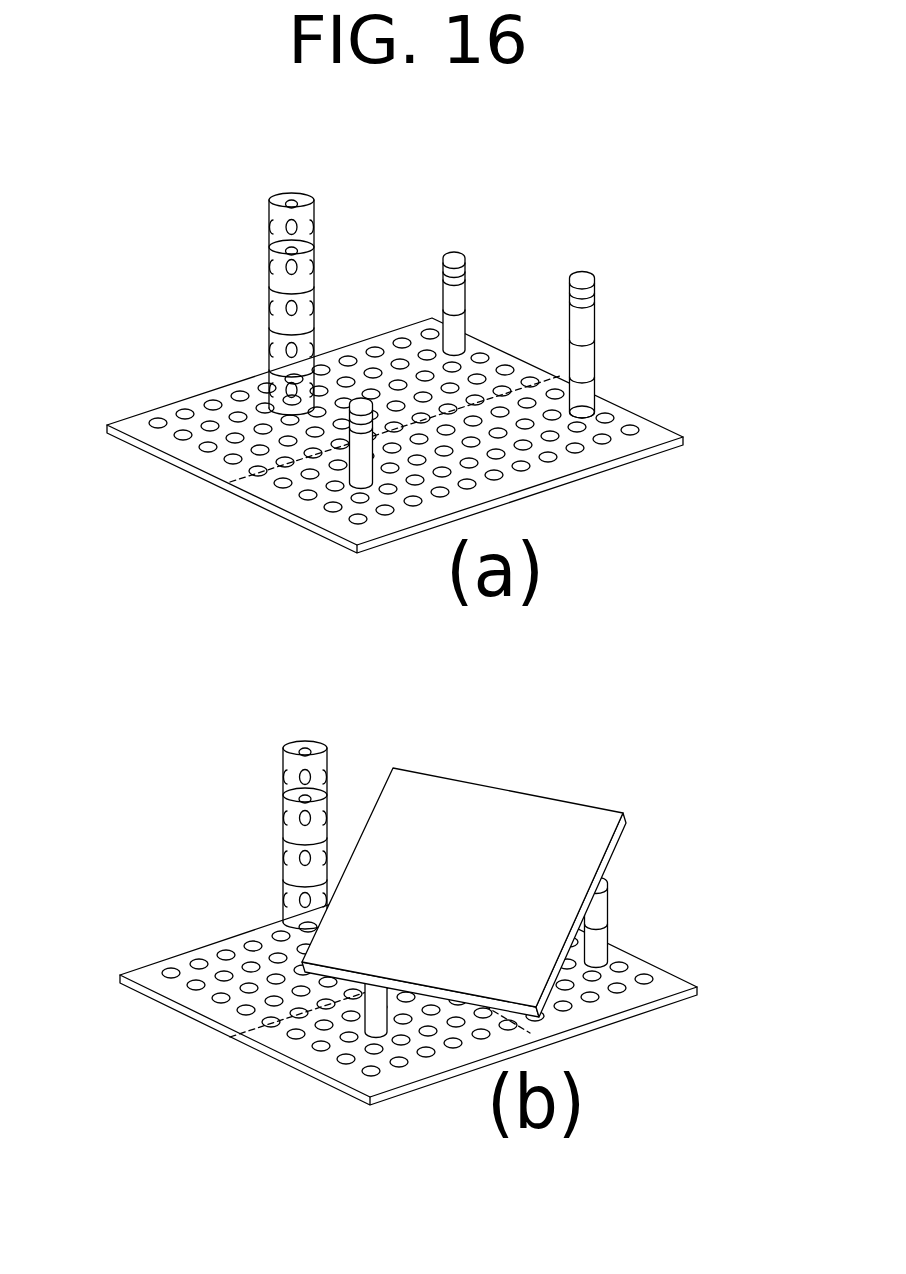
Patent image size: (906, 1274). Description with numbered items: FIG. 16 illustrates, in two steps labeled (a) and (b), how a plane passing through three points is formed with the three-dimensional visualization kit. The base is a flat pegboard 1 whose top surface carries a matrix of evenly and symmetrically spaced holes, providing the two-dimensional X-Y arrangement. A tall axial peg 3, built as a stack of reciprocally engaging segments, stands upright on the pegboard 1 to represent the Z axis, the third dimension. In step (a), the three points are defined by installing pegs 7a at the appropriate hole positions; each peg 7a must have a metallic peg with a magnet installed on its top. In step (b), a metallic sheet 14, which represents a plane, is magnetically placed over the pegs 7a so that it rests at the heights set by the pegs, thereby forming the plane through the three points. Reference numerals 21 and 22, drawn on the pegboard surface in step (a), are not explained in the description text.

The pegboard 1 is at (190, 448).
The axial peg 3 is at (283, 280).
The peg with metallic peg and magnet 7a is at (452, 328).
The metallic sheet 14 is at (462, 790).
The hole 21 is at (503, 432).
The pin hole 22 is at (585, 410).